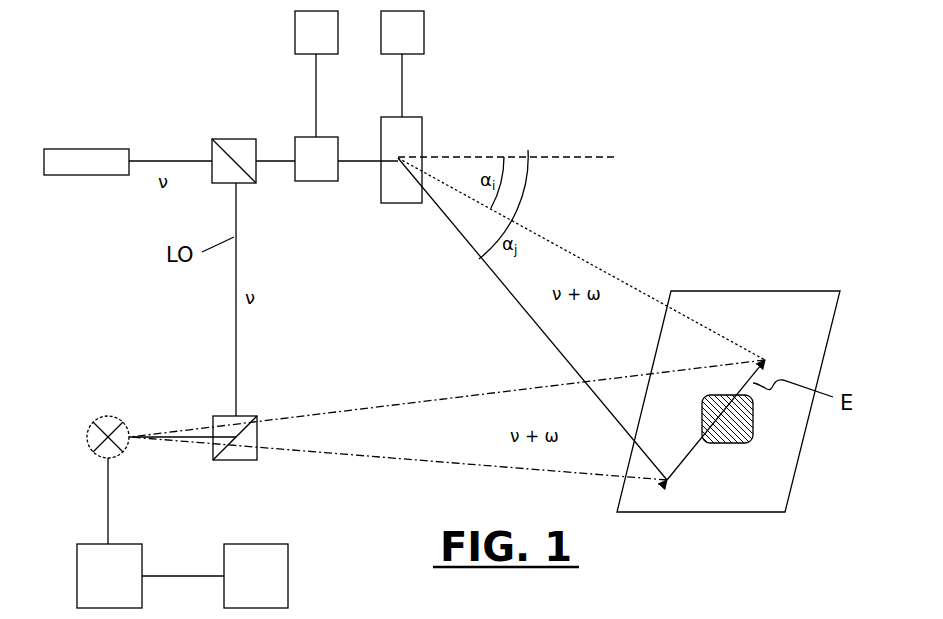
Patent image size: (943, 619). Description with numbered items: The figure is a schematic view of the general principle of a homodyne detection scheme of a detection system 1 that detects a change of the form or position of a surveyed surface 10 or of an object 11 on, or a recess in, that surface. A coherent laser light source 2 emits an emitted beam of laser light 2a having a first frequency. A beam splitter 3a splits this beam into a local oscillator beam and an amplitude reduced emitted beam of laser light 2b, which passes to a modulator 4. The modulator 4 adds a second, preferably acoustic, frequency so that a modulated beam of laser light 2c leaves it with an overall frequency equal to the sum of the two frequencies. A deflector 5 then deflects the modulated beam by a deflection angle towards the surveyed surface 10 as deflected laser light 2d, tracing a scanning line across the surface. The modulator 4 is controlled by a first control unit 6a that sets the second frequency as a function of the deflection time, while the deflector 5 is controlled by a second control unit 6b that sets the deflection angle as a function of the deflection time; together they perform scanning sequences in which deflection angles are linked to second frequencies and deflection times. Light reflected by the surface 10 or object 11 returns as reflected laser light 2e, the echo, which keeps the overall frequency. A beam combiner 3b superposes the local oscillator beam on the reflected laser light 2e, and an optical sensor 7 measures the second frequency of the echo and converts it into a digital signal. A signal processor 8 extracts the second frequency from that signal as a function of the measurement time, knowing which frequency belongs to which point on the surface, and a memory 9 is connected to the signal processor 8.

The detection system 1 is at (80, 73).
The laser light source 2 is at (112, 155).
The emitted beam of laser light 2a is at (186, 157).
The amplitude reduced emitted beam of laser light 2b is at (276, 157).
The modulated beam of laser light 2c is at (360, 157).
The deflected laser light 2d is at (575, 368).
The reflected laser light 2e is at (398, 404).
The beam splitter 3a is at (233, 147).
The beam combiner 3b is at (237, 452).
The modulator 4 is at (315, 167).
The deflector 5 is at (397, 192).
The first control unit 6a is at (316, 74).
The second control unit 6b is at (402, 64).
The optical sensor 7 is at (123, 438).
The signal processor 8 is at (102, 587).
The memory 9 is at (249, 587).
The surveyed surface 10 is at (823, 326).
The object 11 is at (718, 443).